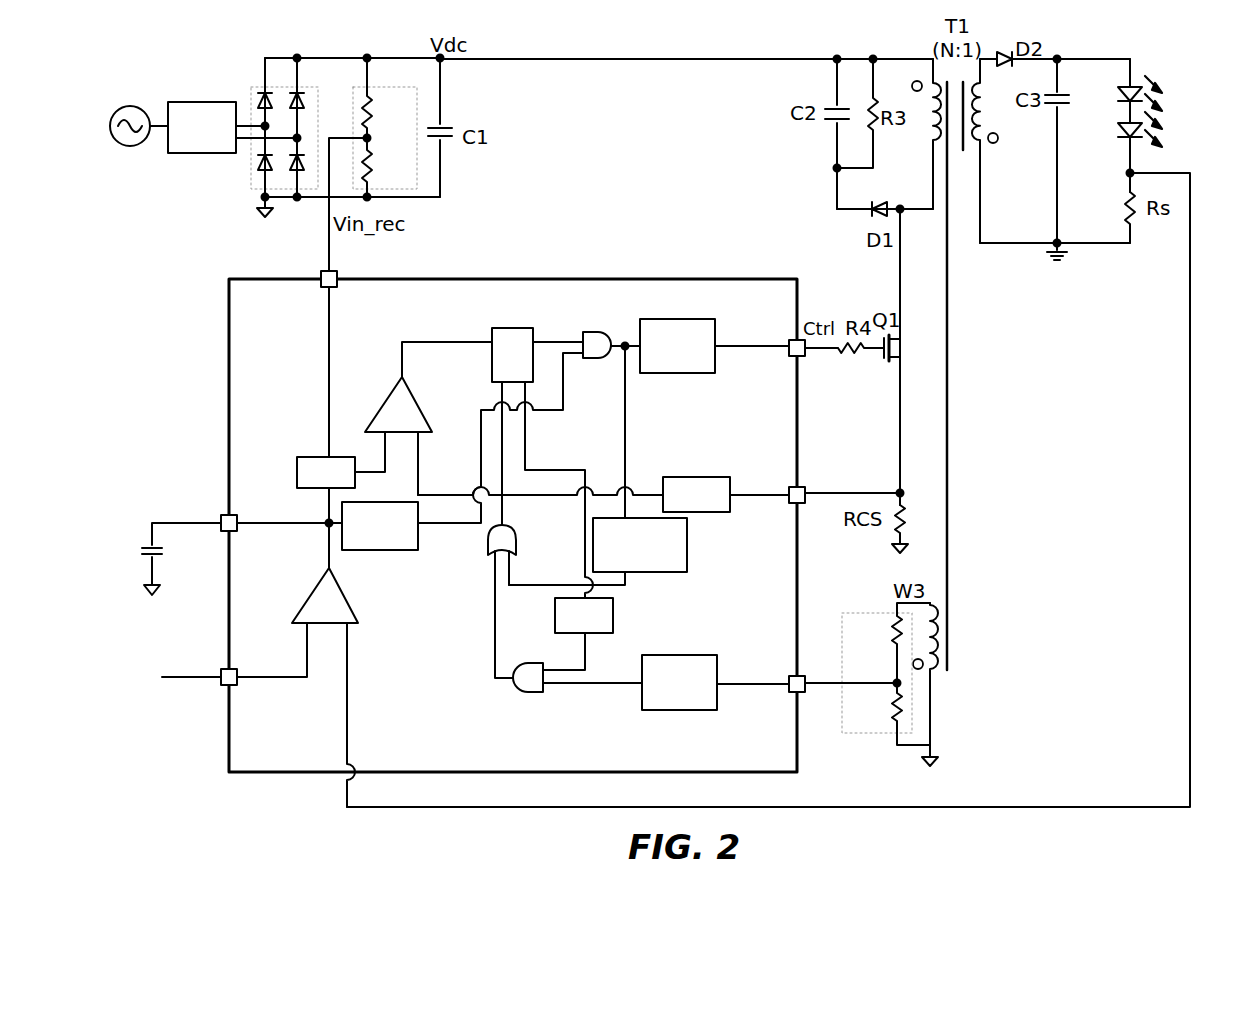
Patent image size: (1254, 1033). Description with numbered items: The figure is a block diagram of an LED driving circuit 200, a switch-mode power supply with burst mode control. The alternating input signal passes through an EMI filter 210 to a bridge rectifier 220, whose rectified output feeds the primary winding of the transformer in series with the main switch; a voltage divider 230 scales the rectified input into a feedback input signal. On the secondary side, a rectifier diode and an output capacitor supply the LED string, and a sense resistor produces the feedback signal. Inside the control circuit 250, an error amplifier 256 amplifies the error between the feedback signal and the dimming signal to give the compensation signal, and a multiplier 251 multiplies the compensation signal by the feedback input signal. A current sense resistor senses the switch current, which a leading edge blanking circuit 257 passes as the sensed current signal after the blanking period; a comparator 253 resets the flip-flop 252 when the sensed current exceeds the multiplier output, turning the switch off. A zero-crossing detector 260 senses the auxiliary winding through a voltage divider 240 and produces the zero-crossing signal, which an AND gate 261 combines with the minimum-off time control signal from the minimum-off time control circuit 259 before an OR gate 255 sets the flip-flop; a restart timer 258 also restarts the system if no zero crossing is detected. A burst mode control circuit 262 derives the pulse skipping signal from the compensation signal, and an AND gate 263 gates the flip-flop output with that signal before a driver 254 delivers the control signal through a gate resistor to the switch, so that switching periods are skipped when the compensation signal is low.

The LED driving circuit 200 is at (1178, 112).
The EMI filter 210 is at (187, 158).
The bridge rectifier 220 is at (247, 96).
The voltage divider 230 is at (353, 96).
The voltage divider 240 is at (883, 734).
The control circuit 250 is at (229, 372).
The multiplier 251 is at (300, 455).
The flip-flop 252 is at (492, 369).
The comparator 253 is at (416, 392).
The driver 254 is at (679, 319).
The OR gate 255 is at (488, 547).
The error amplifier 256 is at (358, 623).
The leading edge blanking circuit 257 is at (715, 477).
The restart timer 258 is at (688, 550).
The minimum-off time control circuit 259 is at (578, 634).
The zero-crossing detector 260 is at (693, 712).
The AND gate 261 is at (523, 693).
The burst mode control circuit 262 is at (380, 526).
The AND gate 263 is at (604, 360).